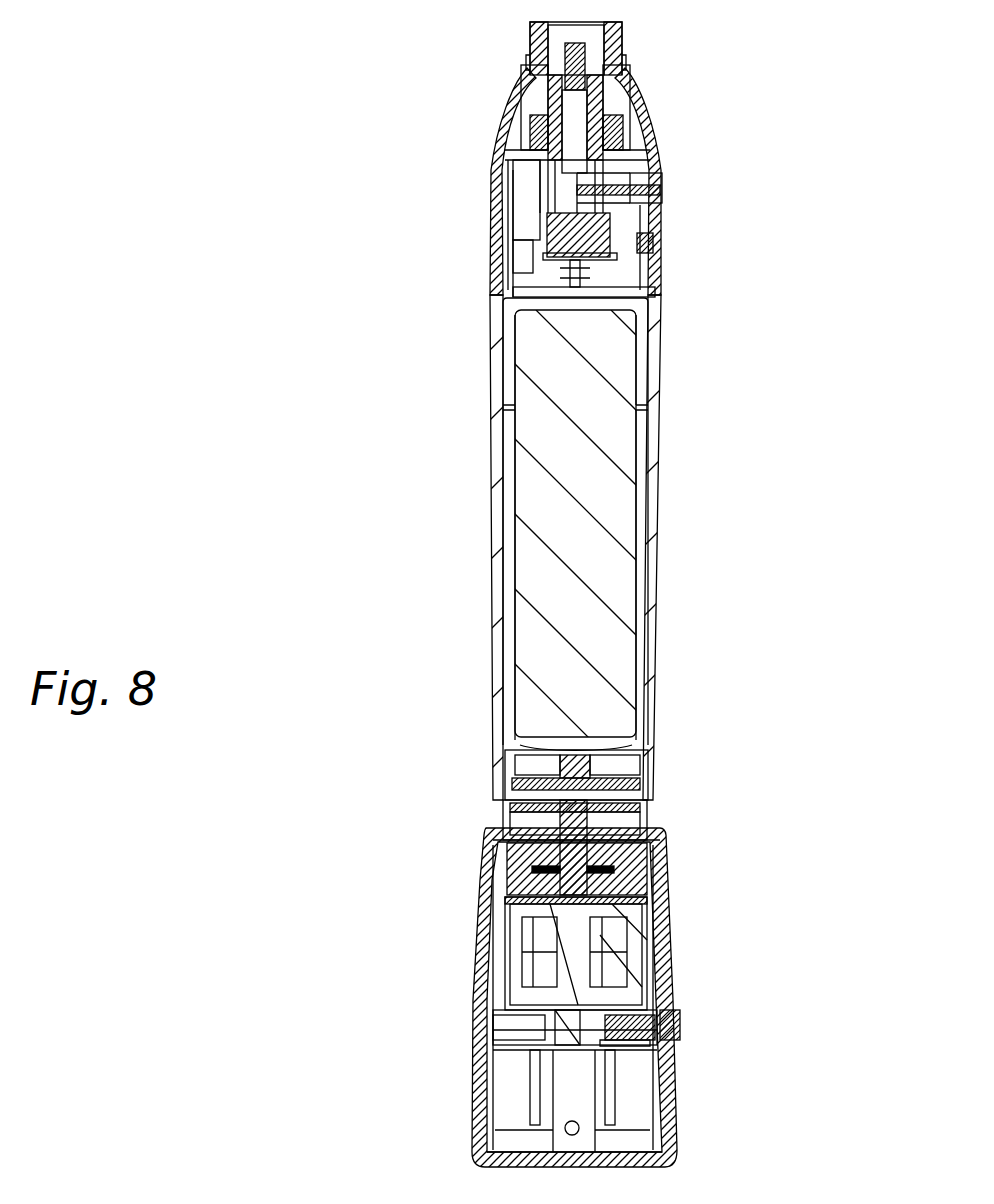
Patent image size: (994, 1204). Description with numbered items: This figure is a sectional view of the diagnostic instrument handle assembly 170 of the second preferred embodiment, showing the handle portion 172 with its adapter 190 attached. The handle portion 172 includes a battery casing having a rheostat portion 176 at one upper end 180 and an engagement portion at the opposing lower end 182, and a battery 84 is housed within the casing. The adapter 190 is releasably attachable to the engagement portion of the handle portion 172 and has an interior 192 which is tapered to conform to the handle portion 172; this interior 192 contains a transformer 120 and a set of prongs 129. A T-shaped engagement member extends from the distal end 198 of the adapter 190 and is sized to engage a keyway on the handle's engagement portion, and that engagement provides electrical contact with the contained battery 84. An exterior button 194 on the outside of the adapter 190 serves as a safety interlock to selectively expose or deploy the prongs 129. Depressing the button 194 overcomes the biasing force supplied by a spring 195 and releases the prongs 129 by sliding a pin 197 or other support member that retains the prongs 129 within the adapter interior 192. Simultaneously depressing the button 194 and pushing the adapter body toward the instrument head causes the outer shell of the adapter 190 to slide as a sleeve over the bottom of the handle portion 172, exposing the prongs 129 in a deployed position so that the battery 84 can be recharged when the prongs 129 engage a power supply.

The diagnostic instrument handle assembly 170 is at (368, 412).
The handle portion 172 is at (665, 545).
The upper end 180 is at (500, 162).
The rheostat portion 176 is at (655, 165).
The battery 84 is at (528, 606).
The lower end 182 is at (498, 783).
The distal end 198 is at (485, 851).
The adapter 190 is at (668, 942).
The transformer 120 is at (520, 928).
The spring 195 is at (652, 1038).
The pin 197 is at (660, 1045).
The exterior button 194 is at (680, 1022).
The prongs 129 is at (495, 1085).
The interior 192 is at (477, 1153).